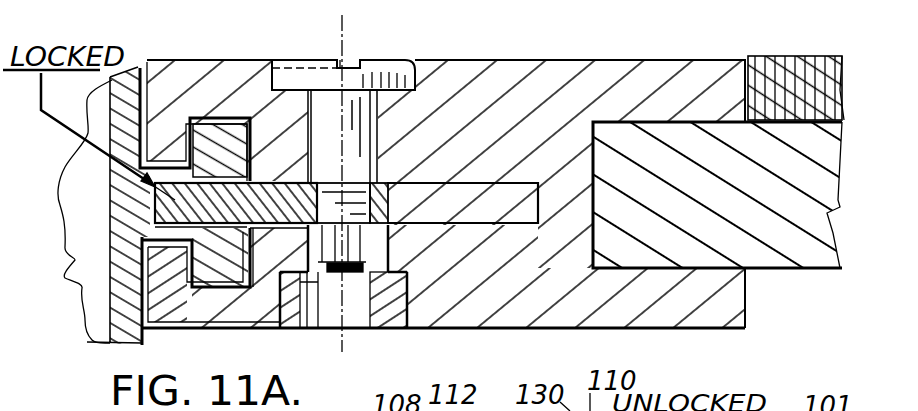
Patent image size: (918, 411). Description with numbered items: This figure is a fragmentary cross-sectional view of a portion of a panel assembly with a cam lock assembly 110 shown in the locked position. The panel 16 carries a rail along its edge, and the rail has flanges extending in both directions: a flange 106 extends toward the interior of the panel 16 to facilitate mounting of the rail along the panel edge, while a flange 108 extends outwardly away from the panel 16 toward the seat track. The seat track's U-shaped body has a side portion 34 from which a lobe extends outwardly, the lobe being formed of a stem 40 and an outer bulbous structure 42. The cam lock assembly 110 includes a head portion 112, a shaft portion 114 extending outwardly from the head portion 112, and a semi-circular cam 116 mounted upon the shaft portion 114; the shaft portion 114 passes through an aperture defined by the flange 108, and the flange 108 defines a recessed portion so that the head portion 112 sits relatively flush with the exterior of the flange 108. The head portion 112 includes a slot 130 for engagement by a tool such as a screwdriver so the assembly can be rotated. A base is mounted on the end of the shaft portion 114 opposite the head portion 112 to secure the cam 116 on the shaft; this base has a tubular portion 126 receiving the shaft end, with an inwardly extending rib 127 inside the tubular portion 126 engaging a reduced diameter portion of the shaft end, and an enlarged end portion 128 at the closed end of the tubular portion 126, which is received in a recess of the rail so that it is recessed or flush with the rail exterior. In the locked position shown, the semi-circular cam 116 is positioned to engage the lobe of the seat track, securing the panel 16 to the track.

The panel 16 is at (797, 243).
The side portion 34 is at (120, 317).
The stem 40 is at (160, 174).
The outer bulbous structure 42 is at (224, 133).
The flange 106 is at (687, 83).
The flange 108 is at (200, 75).
The cam lock assembly 110 is at (390, 42).
The head portion 112 is at (395, 70).
The shaft portion 114 is at (357, 137).
The semi-circular cam 116 is at (192, 285).
The tubular portion 126 is at (380, 248).
The inwardly extending rib 127 is at (367, 257).
The enlarged end portion 128 is at (306, 290).
The slot 130 is at (345, 62).